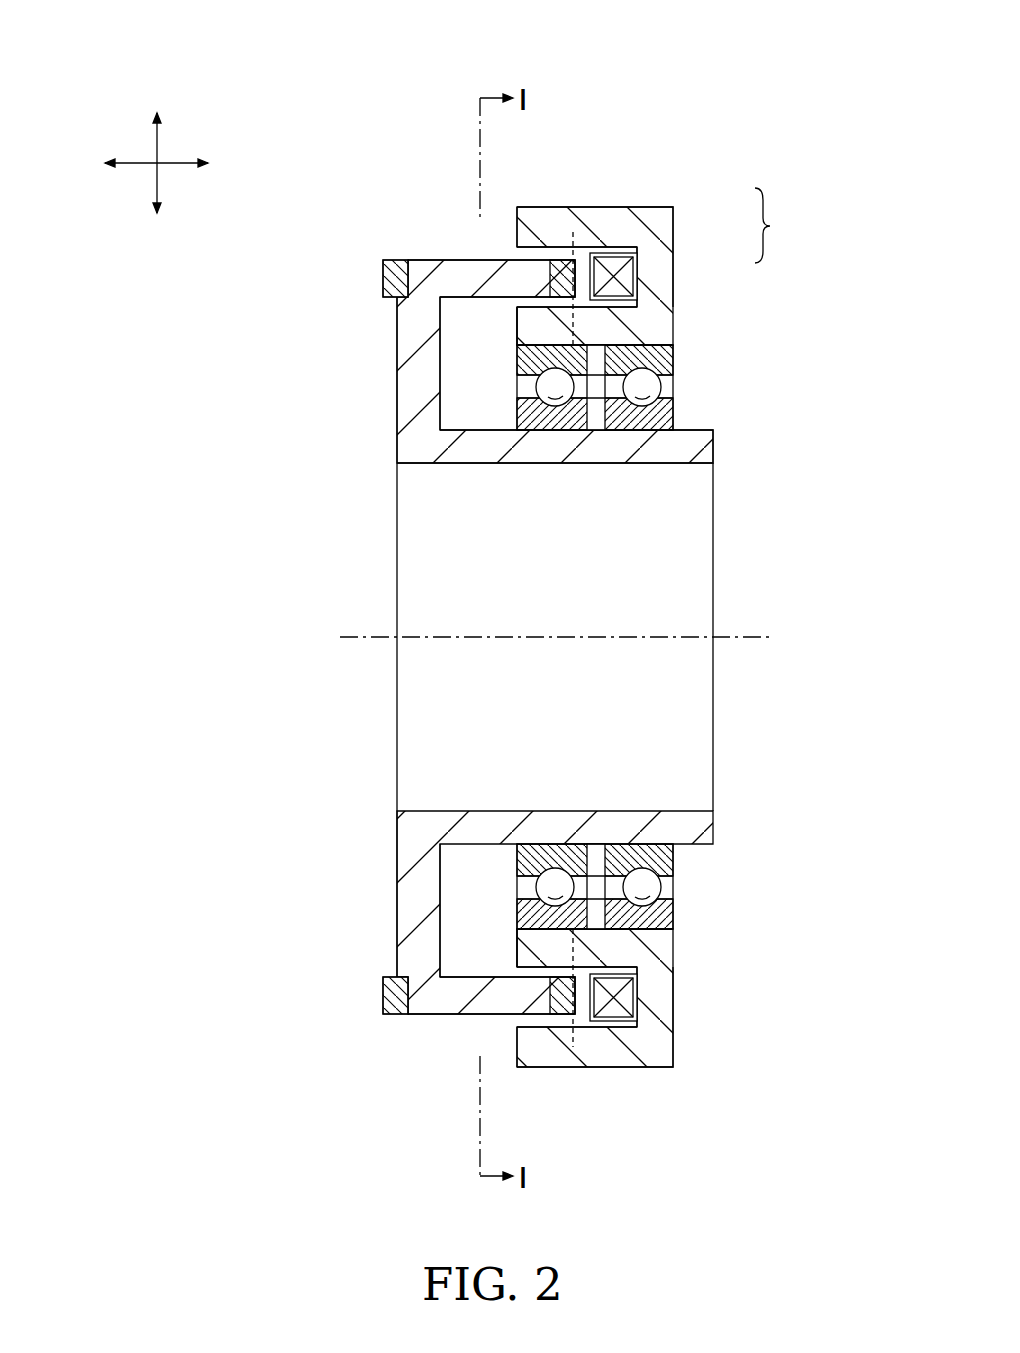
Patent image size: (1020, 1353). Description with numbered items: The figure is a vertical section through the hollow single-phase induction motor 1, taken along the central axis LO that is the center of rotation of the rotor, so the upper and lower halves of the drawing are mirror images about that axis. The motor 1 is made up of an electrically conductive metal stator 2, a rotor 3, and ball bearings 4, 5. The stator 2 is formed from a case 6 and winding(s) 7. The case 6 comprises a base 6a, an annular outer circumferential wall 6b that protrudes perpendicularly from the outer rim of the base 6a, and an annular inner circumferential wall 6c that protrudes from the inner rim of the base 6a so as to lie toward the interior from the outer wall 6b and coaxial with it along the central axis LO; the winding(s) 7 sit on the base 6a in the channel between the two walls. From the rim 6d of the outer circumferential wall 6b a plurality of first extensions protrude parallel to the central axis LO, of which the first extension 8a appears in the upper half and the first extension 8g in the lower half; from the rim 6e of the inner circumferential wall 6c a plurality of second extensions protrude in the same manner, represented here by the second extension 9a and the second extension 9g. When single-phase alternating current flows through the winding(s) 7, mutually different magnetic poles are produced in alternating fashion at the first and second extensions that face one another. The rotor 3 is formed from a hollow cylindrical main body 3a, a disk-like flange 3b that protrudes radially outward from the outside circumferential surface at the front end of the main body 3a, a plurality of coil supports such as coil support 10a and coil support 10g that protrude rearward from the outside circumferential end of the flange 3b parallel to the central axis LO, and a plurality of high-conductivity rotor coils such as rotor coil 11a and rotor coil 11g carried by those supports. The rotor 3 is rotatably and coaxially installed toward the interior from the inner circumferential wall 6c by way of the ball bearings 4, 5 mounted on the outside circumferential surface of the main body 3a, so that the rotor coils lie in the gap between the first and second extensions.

The hollow single-phase induction motor 1 is at (188, 30).
The stator 2 is at (621, 626).
The rotor 3 is at (390, 330).
The hollow cylindrical main body 3a is at (698, 823).
The flange 3b is at (418, 881).
The ball bearing 4 is at (510, 370).
The ball bearing 5 is at (603, 637).
The case 6 is at (605, 626).
The base 6a is at (663, 300).
The annular outer circumferential wall 6b is at (595, 223).
The annular inner circumferential wall 6c is at (663, 355).
The rim of outer circumferential wall 6d is at (573, 232).
The rim of inner circumferential wall 6e is at (578, 328).
The winding 7 is at (625, 275).
The first extension 8a is at (510, 214).
The first extension 8g is at (512, 1062).
The second extension 9a is at (518, 322).
The second extension 9g is at (515, 947).
The coil support 10a is at (469, 272).
The coil support 10g is at (472, 992).
The rotor coil 11a is at (387, 272).
The rotor coil 11g is at (390, 1000).
The central axis LO is at (745, 636).